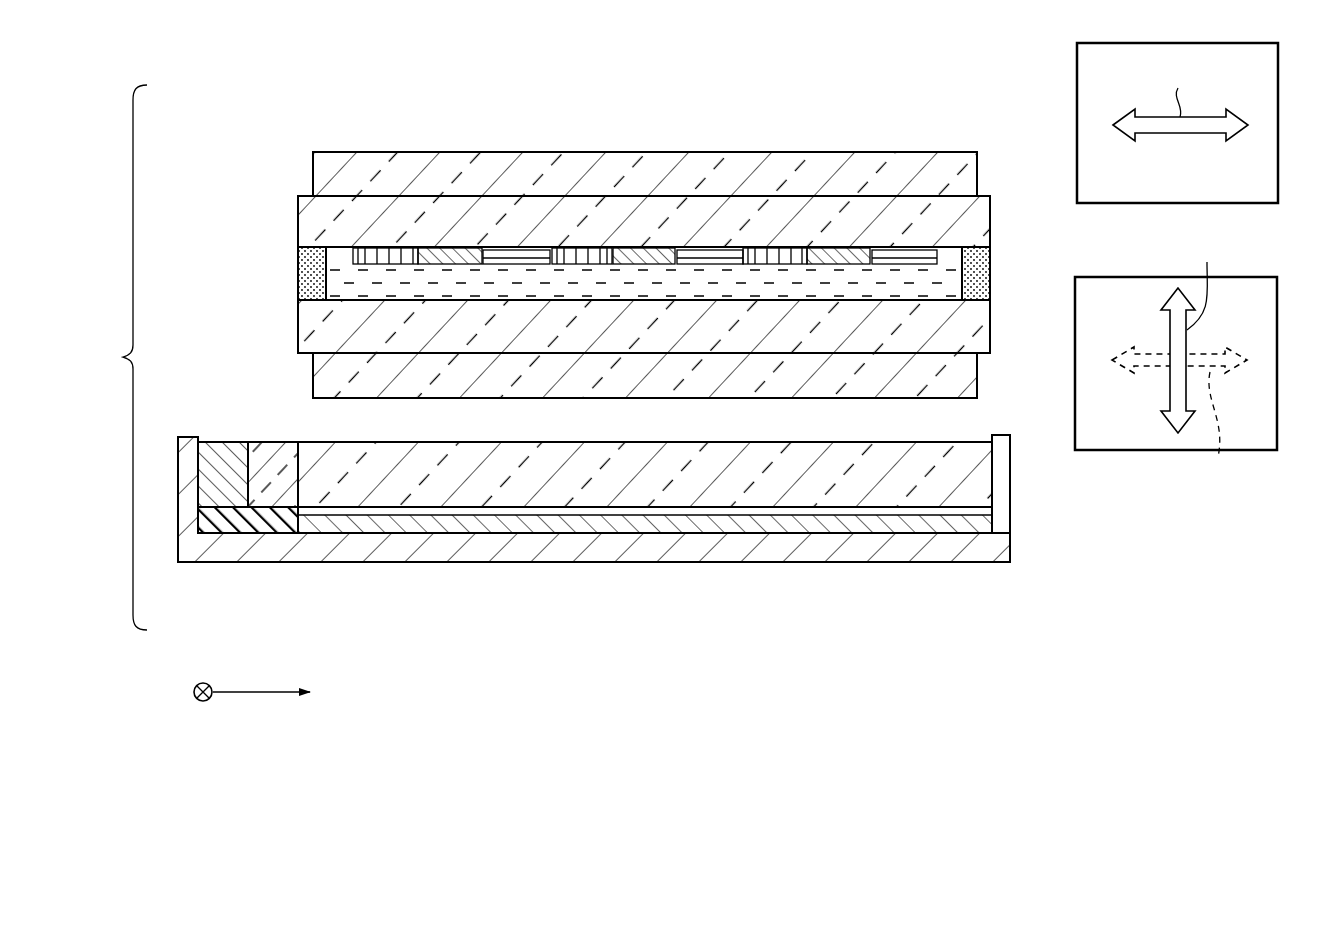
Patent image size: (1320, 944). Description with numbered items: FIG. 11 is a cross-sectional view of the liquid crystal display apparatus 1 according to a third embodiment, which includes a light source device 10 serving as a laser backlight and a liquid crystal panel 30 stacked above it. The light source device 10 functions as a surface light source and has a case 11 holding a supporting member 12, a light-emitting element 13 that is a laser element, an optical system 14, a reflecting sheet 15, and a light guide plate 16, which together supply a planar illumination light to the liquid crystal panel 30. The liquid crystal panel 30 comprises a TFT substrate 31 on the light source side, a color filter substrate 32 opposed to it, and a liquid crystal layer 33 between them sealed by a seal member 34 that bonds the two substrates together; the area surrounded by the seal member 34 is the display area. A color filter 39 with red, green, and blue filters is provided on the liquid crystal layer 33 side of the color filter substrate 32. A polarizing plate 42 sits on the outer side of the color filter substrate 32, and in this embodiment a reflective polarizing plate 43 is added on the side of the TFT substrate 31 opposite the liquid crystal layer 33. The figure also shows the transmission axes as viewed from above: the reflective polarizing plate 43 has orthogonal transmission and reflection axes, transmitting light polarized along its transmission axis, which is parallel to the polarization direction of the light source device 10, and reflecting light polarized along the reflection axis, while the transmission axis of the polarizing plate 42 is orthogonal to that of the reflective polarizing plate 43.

The liquid crystal display apparatus 1 is at (671, 128).
The liquid crystal panel 30 is at (930, 128).
The polarizing plate 42 is at (1073, 127).
The color filter substrate 32 is at (990, 216).
The seal member 34 is at (309, 278).
The color filter 39 is at (988, 254).
The liquid crystal layer 33 is at (957, 273).
The TFT substrate 31 is at (990, 327).
The reflective polarizing plate 43 is at (1072, 363).
The light source device 10 is at (958, 591).
The case 11 is at (995, 548).
The supporting member 12 is at (282, 532).
The light-emitting element 13 is at (225, 455).
The optical system 14 is at (272, 455).
The reflecting sheet 15 is at (983, 522).
The light guide plate 16 is at (980, 472).